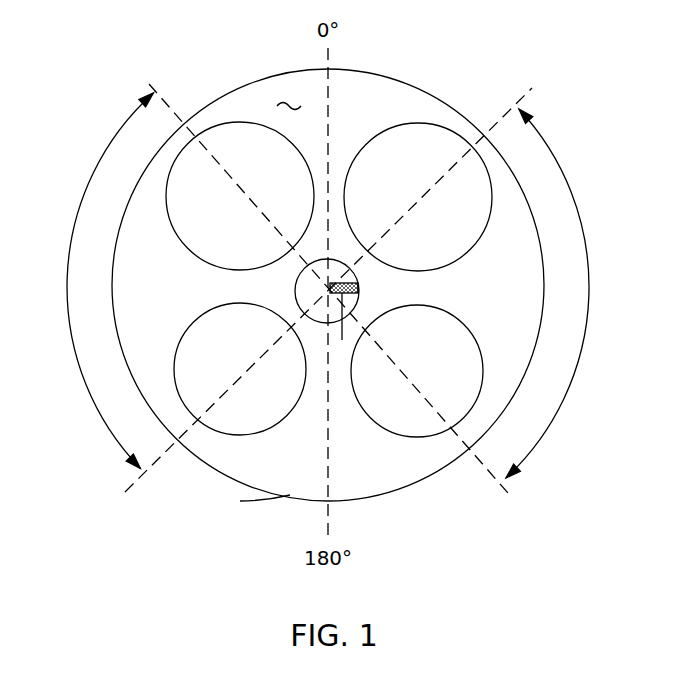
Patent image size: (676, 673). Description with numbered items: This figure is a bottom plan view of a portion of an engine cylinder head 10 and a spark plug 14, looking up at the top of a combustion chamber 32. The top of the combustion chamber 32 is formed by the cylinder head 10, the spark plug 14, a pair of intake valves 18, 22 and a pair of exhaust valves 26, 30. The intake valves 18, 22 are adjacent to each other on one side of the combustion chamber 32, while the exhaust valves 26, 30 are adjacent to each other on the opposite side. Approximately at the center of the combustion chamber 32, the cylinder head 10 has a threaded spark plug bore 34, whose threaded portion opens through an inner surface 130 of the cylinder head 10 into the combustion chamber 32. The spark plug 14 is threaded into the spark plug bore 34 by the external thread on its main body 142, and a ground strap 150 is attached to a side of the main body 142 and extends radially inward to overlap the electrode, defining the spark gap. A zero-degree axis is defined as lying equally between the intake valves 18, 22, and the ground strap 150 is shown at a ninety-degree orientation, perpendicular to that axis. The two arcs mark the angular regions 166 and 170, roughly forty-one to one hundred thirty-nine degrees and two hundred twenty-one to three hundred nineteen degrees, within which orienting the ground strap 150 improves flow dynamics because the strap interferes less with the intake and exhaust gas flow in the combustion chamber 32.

The cylinder head 10 is at (365, 70).
The spark plug 14 is at (330, 288).
The intake valve 18 is at (243, 133).
The intake valve 22 is at (441, 133).
The exhaust valve 26 is at (217, 420).
The exhaust valve 30 is at (418, 425).
The combustion chamber 32 is at (275, 443).
The spark plug bore 34 is at (358, 290).
The inner surface 130 is at (290, 100).
The main body 142 is at (300, 292).
The ground strap 150 is at (342, 340).
The angular region 166 is at (552, 150).
The angular region 170 is at (105, 150).